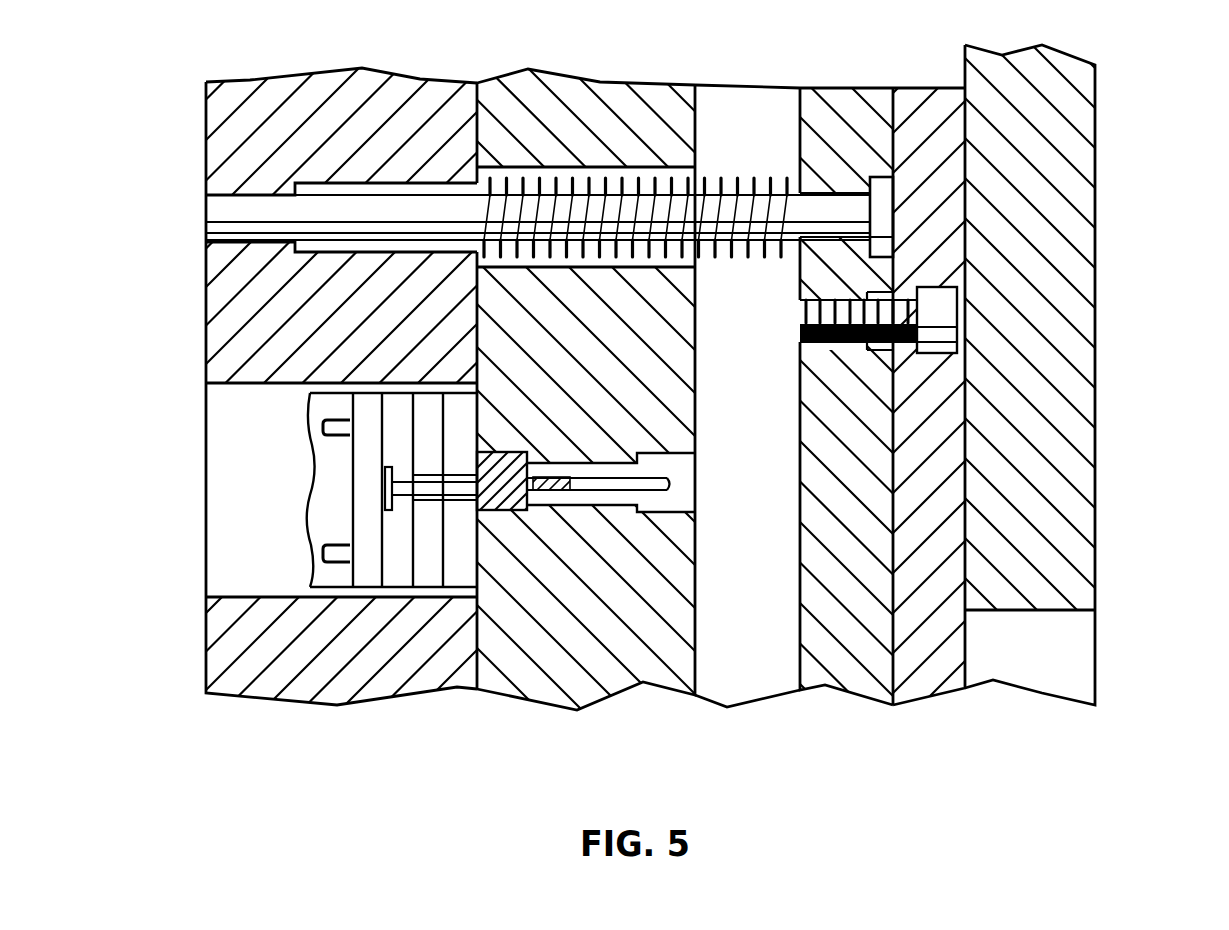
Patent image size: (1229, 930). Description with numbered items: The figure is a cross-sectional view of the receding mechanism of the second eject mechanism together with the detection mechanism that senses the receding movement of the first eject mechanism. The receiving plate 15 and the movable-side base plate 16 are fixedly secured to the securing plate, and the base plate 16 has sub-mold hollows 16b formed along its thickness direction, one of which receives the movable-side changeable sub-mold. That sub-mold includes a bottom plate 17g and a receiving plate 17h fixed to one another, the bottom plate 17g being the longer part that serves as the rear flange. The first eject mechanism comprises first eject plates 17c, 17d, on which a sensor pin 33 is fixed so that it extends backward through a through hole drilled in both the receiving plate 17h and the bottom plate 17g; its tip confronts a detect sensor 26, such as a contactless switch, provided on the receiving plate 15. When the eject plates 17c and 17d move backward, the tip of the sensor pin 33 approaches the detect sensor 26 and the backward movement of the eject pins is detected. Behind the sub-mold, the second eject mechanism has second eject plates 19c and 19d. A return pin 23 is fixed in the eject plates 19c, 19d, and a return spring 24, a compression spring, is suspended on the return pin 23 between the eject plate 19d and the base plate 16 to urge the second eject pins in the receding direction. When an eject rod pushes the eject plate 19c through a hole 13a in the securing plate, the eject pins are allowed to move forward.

The hole 13a is at (1023, 610).
The receiving plate 15 is at (600, 143).
The movable-side base plate 16 is at (355, 148).
The sub-mold hollow 16b is at (233, 437).
The first eject plate 17c is at (396, 572).
The first eject plate 17d is at (360, 526).
The bottom plate 17g is at (463, 568).
The receiving plate 17h is at (425, 568).
The second eject plate 19c is at (935, 432).
The second eject plate 19d is at (845, 667).
The return pin 23 is at (220, 208).
The return spring 24 is at (737, 125).
The detect sensor 26 is at (507, 512).
The sensor pin 33 is at (455, 478).